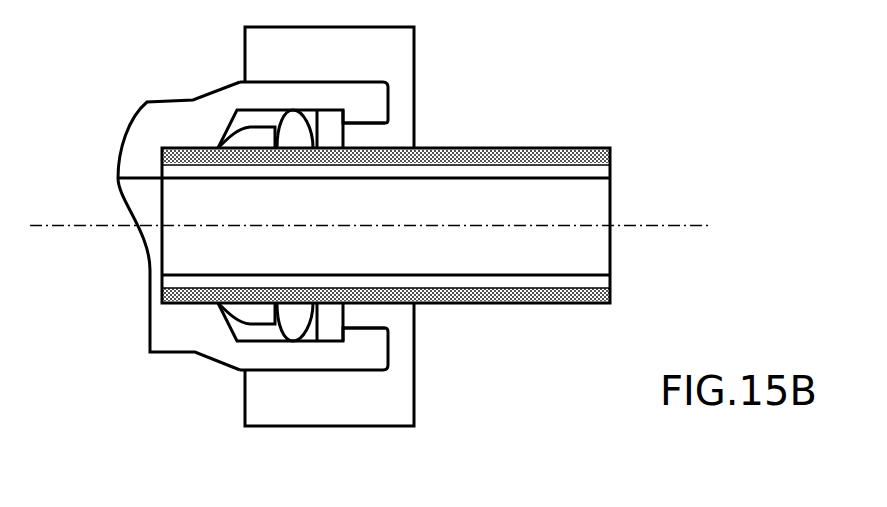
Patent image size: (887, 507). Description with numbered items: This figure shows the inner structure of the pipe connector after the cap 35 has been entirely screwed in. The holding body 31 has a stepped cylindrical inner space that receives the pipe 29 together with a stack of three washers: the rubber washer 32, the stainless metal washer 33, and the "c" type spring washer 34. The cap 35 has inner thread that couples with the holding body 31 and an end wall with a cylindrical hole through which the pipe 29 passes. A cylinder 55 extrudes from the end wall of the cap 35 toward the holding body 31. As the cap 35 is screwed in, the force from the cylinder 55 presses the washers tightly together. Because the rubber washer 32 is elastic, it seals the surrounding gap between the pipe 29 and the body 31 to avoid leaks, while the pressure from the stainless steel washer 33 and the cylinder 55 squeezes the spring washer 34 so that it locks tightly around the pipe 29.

The pipe 29 is at (597, 148).
The holding body 31 is at (160, 122).
The rubber washer 32 is at (247, 315).
The stainless metal washer 33 is at (288, 315).
The "c" type spring washer 34 is at (332, 330).
The cap 35 is at (418, 88).
The cylinder 55 is at (357, 315).